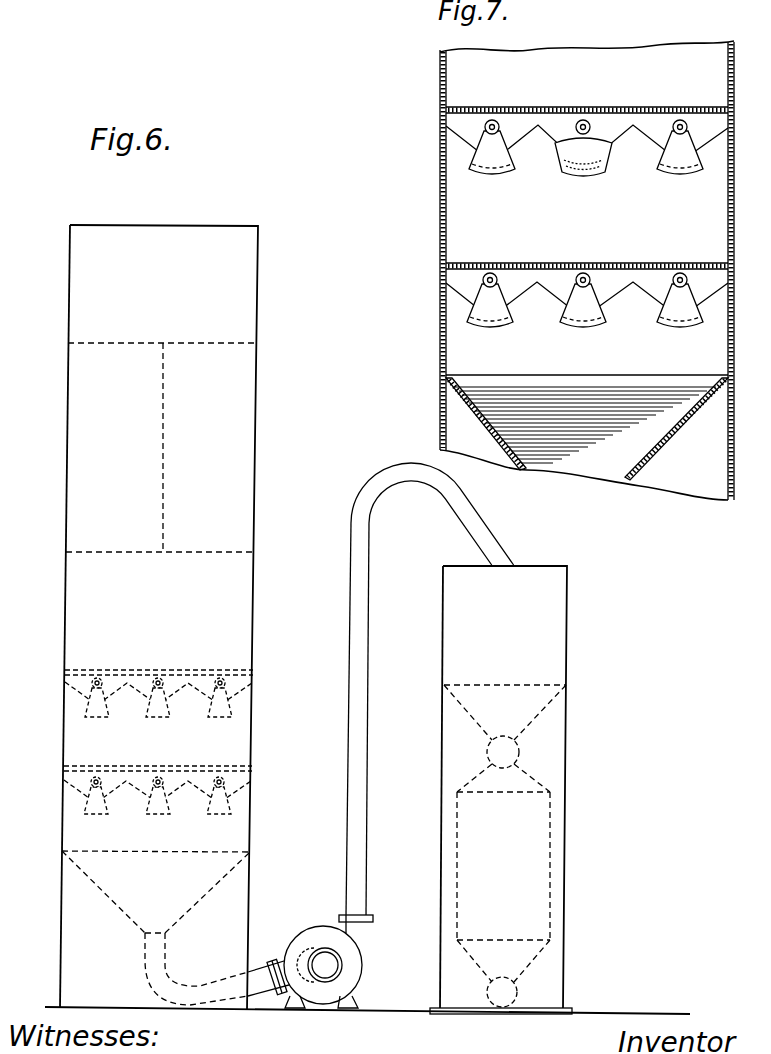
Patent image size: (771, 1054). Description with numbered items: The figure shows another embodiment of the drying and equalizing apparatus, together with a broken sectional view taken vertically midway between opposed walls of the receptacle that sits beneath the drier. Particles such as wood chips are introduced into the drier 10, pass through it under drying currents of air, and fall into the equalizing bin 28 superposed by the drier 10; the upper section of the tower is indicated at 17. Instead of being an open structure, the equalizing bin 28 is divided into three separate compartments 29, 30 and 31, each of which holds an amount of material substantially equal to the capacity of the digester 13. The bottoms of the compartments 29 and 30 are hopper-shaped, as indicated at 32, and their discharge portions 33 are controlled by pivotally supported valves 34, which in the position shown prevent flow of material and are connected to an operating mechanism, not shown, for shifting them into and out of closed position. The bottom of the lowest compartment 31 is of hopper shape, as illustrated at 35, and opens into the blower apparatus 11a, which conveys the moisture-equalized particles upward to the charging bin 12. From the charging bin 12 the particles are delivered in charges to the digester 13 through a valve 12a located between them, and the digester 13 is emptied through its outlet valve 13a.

In FIG. 6, the drier 10 is at (243, 437).
In FIG. 6, the upper section of tower 17 is at (257, 313).
In FIG. 7, the compartment 29 is at (440, 88).
In FIG. 6, the compartment 29 is at (80, 600).
In FIG. 7, the compartment 30 is at (455, 196).
In FIG. 6, the compartment 30 is at (95, 738).
In FIG. 7, the equalizing bin 28 is at (457, 250).
In FIG. 7, the compartment 31 is at (552, 371).
In FIG. 6, the compartment 31 is at (76, 830).
In FIG. 7, the hopper-shaped bottom 32 is at (533, 134).
In FIG. 7, the discharge portion 33 is at (577, 176).
In FIG. 7, the pivotally supported valve 34 is at (492, 177).
In FIG. 6, the pivotally supported valve 34 is at (213, 712).
In FIG. 7, the hopper-shaped bottom 35 is at (671, 449).
In FIG. 6, the hopper-shaped bottom 35 is at (110, 900).
In FIG. 6, the blower apparatus 11a is at (318, 930).
In FIG. 6, the charging bin 12 is at (535, 790).
In FIG. 6, the valve 12a is at (520, 752).
In FIG. 6, the digester 13 is at (550, 897).
In FIG. 6, the outlet valve 13a is at (517, 990).